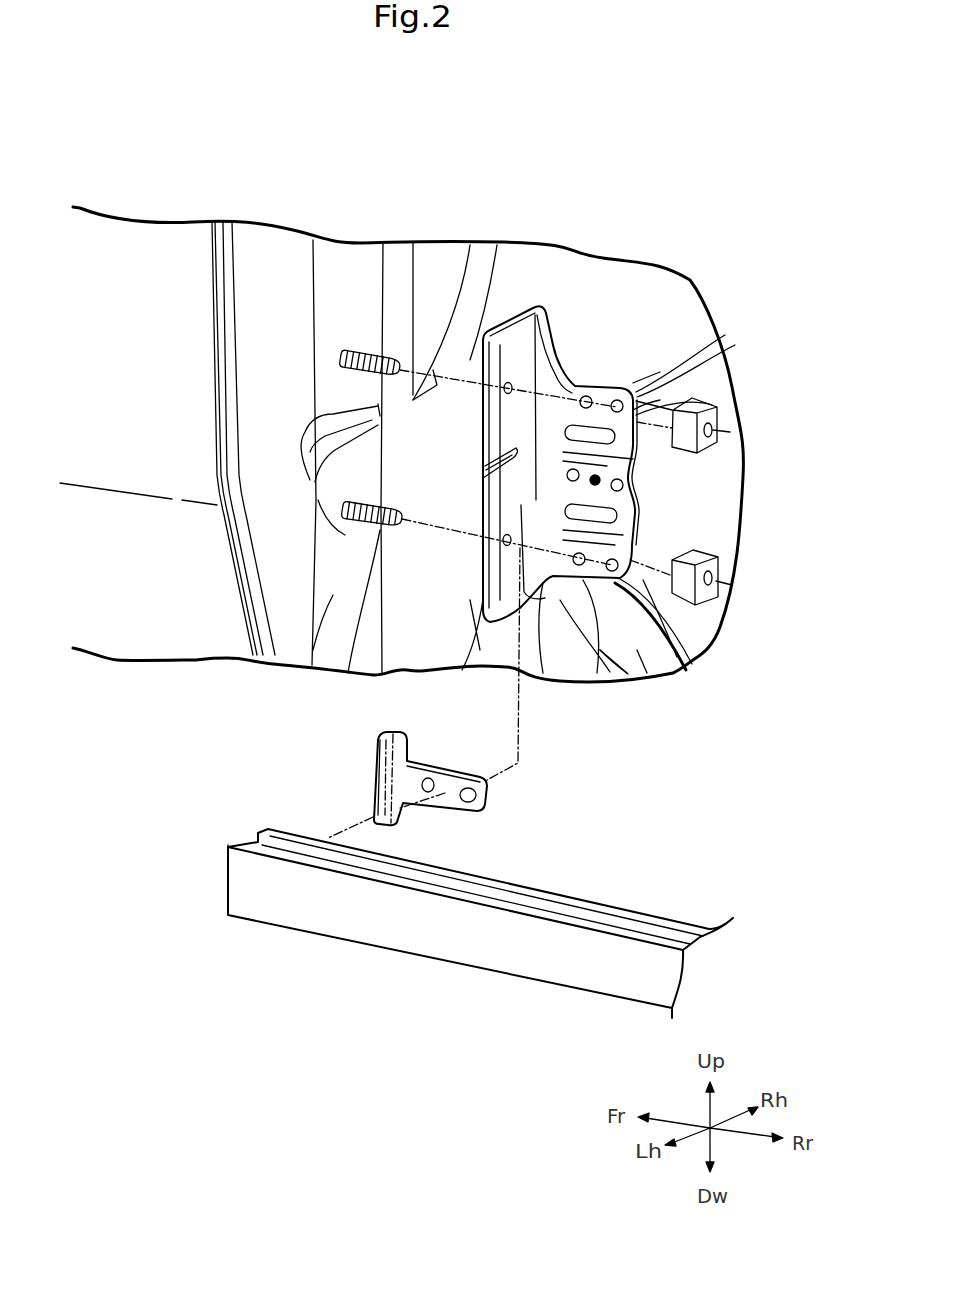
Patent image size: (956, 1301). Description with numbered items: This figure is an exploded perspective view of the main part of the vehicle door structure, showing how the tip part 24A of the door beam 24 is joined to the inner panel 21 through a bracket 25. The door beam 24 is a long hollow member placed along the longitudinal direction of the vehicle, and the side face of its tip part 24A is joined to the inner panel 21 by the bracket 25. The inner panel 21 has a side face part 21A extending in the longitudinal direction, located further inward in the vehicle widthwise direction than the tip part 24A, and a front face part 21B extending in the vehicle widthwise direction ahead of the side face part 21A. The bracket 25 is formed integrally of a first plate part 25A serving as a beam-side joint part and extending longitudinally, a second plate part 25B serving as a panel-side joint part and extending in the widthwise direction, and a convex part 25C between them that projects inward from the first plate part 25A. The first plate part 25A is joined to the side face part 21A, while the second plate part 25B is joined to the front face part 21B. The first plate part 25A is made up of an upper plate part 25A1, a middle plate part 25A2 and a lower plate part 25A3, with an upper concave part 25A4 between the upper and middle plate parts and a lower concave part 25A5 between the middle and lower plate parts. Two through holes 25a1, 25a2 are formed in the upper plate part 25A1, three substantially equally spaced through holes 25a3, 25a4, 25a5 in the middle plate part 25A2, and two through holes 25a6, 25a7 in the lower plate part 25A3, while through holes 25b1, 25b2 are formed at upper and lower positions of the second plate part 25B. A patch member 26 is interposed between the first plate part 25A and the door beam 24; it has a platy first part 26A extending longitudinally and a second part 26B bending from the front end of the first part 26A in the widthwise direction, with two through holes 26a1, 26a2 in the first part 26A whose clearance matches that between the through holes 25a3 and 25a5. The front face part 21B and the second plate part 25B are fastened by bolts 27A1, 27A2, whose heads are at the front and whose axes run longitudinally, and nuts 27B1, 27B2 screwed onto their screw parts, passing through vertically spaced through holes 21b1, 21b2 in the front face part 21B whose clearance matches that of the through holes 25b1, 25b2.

The inner panel 21 is at (398, 228).
The side face part 21A is at (645, 657).
The front face part 21B is at (332, 597).
The through hole 21b1 is at (308, 418).
The through hole 21b2 is at (343, 508).
The door beam 24 is at (498, 952).
The tip part 24A is at (245, 908).
The bracket 25 is at (583, 357).
The first plate part 25A is at (646, 493).
The upper plate part 25A1 is at (633, 387).
The middle plate part 25A2 is at (637, 470).
The lower plate part 25A3 is at (595, 577).
The upper concave part 25A4 is at (640, 405).
The lower concave part 25A5 is at (627, 523).
The second plate part 25B is at (482, 605).
The convex part 25C is at (552, 358).
The through hole 25a1 is at (592, 383).
The through hole 25a2 is at (615, 385).
The through hole 25a3 is at (568, 480).
The through hole 25a4 is at (515, 451).
The through hole 25a5 is at (625, 510).
The through hole 25a6 is at (572, 572).
The through hole 25a7 is at (680, 652).
The through hole 25b1 is at (505, 391).
The through hole 25b2 is at (507, 545).
The patch member 26 is at (503, 810).
The first part 26A is at (468, 805).
The second part 26B is at (390, 782).
The through hole 26a1 is at (430, 778).
The through hole 26a2 is at (490, 793).
The bolt 27A1 is at (362, 352).
The bolt 27A2 is at (366, 521).
The nut 27B1 is at (702, 453).
The nut 27B2 is at (707, 600).